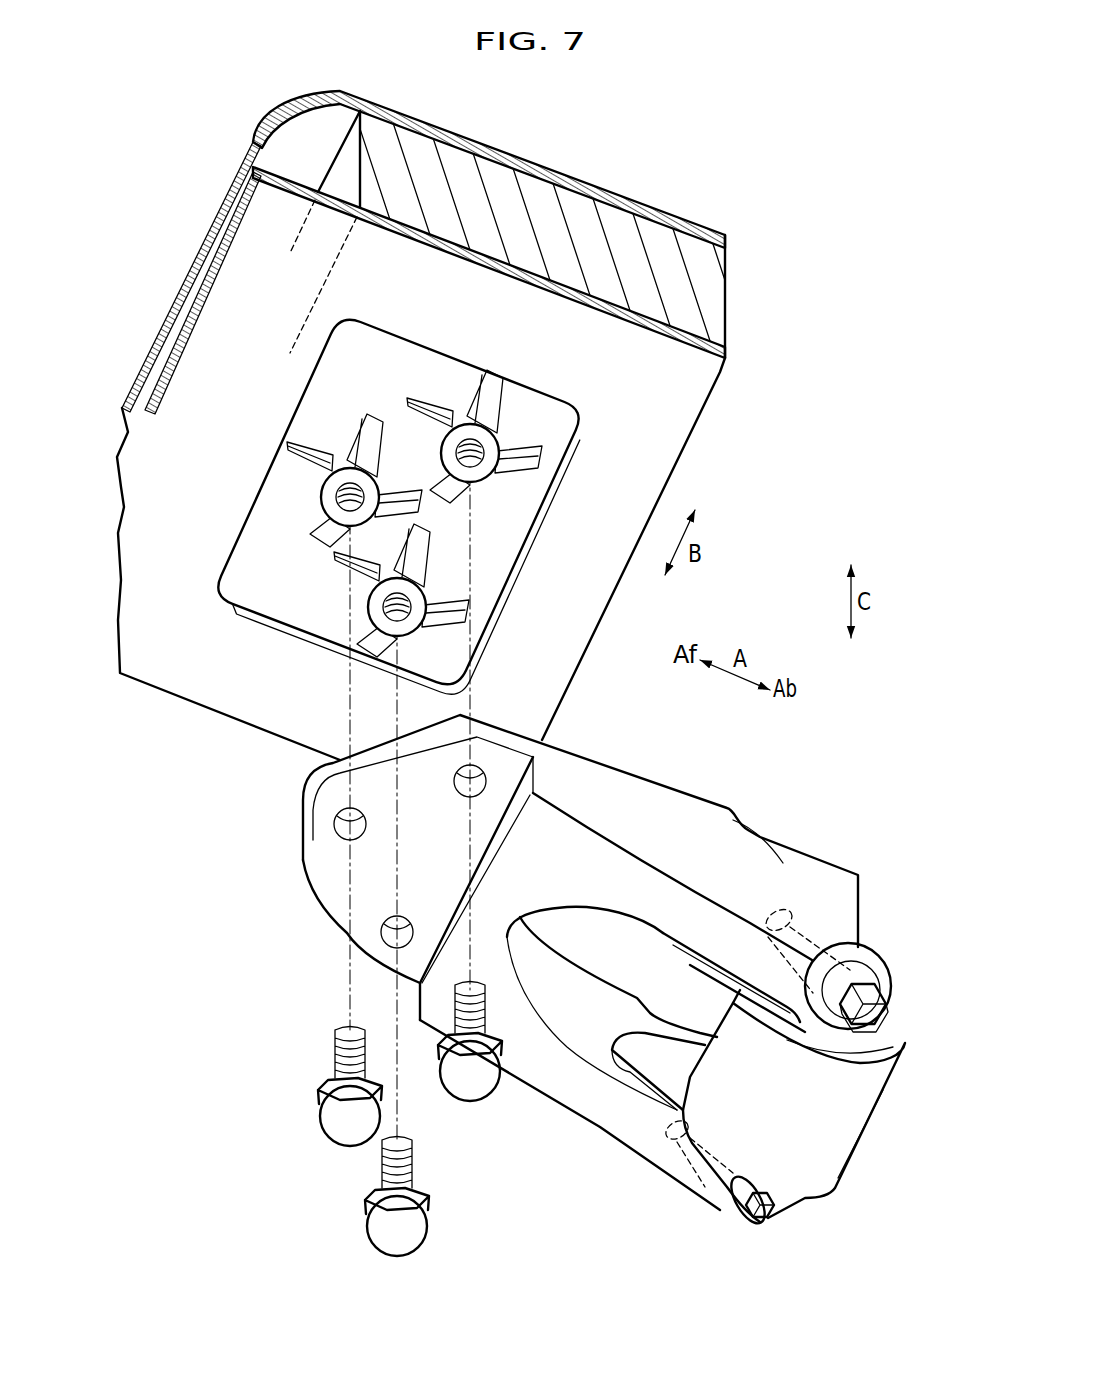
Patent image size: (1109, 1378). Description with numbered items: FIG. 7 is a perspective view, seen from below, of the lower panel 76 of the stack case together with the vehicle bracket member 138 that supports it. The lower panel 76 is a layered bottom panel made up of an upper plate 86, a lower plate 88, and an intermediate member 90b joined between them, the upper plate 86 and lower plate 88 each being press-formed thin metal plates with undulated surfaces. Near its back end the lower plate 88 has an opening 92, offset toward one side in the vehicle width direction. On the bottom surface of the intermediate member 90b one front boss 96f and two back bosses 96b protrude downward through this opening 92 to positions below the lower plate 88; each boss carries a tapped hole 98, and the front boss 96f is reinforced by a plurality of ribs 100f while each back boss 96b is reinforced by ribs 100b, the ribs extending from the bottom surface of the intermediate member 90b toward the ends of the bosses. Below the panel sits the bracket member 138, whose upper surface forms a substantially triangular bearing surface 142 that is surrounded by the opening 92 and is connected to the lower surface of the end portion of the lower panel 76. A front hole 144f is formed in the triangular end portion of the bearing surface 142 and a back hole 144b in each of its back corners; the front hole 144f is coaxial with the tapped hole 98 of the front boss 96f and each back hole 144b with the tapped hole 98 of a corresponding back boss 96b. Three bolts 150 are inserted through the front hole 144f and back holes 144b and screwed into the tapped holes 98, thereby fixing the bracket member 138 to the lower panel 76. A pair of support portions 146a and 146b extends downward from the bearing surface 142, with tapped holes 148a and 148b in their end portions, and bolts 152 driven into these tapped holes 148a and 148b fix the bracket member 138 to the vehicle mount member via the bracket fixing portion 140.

The lower panel 76 is at (457, 425).
The upper plate 86 is at (702, 226).
The lower plate 88 is at (690, 378).
The intermediate member 90b is at (714, 299).
The opening 92 is at (570, 443).
The front boss 96f is at (340, 460).
The back boss 96b is at (385, 568).
The tapped hole 98 is at (337, 502).
The rib 100f is at (293, 458).
The rib 100b is at (533, 460).
The bracket member 138 is at (585, 993).
The bracket fixing portion 140 is at (860, 1113).
The bearing surface 142 is at (544, 857).
The front hole 144f is at (340, 840).
The back hole 144b is at (463, 790).
The support portion 146a is at (635, 1133).
The support portion 146b is at (773, 865).
The tapped hole 148a is at (693, 1147).
The tapped hole 148b is at (790, 920).
The bolt 150 is at (465, 1080).
The bolt 152 is at (885, 1012).